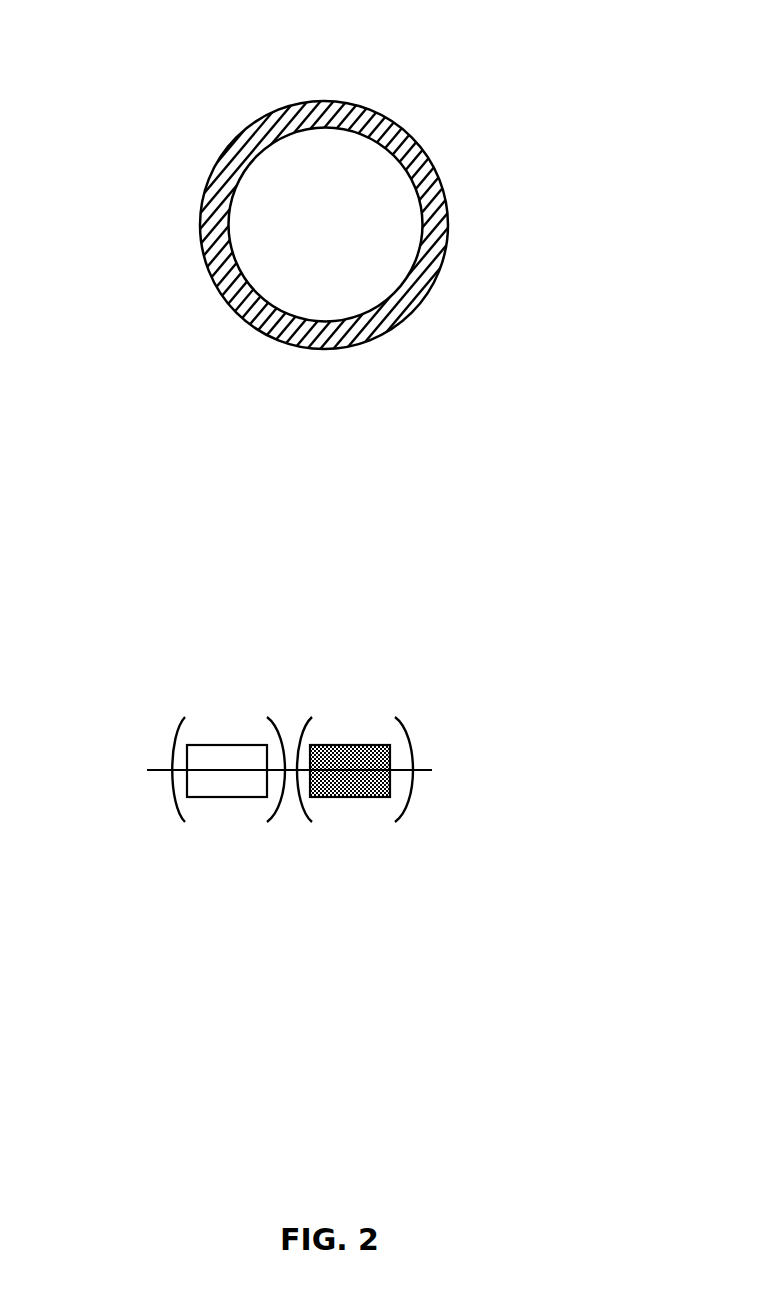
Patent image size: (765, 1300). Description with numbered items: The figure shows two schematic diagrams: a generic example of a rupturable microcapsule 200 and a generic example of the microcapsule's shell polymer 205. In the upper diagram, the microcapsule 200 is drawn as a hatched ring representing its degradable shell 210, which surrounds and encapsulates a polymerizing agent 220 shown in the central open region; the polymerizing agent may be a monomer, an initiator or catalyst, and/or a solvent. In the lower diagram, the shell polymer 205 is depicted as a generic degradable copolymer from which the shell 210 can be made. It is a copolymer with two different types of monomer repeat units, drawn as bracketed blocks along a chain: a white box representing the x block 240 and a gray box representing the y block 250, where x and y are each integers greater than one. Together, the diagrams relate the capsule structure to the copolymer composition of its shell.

The microcapsule 200 is at (198, 36).
The shell polymer 205 is at (136, 613).
The degradable shell 210 is at (204, 248).
The polymerizing agent 220 is at (308, 237).
The x block 240 is at (224, 684).
The y block 250 is at (361, 686).